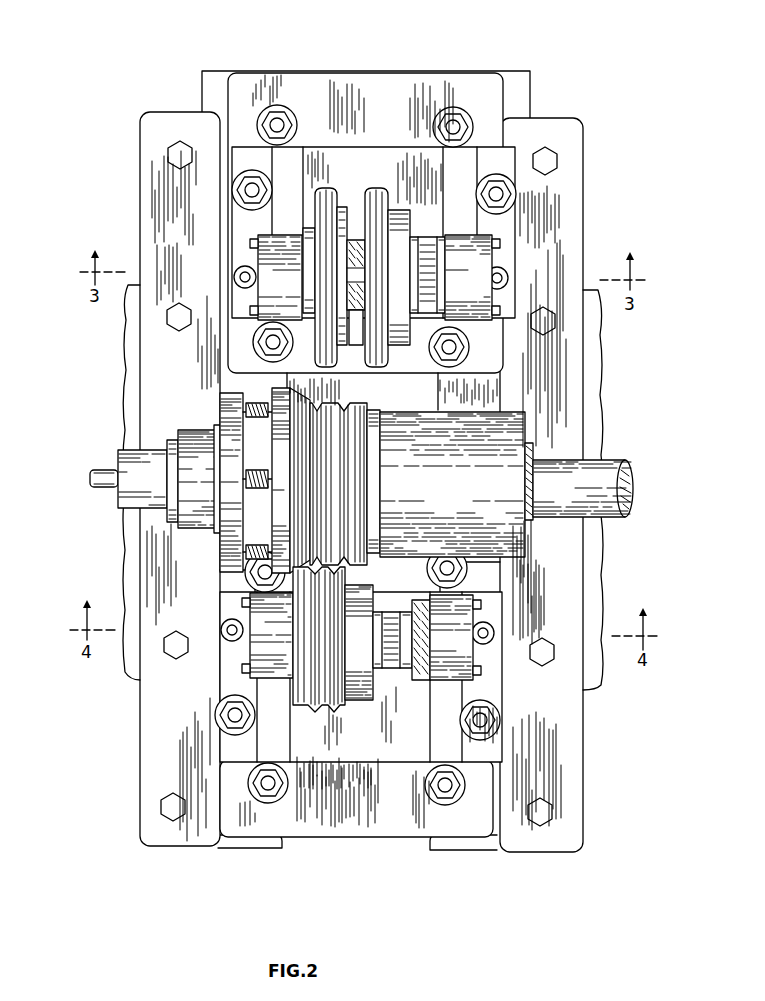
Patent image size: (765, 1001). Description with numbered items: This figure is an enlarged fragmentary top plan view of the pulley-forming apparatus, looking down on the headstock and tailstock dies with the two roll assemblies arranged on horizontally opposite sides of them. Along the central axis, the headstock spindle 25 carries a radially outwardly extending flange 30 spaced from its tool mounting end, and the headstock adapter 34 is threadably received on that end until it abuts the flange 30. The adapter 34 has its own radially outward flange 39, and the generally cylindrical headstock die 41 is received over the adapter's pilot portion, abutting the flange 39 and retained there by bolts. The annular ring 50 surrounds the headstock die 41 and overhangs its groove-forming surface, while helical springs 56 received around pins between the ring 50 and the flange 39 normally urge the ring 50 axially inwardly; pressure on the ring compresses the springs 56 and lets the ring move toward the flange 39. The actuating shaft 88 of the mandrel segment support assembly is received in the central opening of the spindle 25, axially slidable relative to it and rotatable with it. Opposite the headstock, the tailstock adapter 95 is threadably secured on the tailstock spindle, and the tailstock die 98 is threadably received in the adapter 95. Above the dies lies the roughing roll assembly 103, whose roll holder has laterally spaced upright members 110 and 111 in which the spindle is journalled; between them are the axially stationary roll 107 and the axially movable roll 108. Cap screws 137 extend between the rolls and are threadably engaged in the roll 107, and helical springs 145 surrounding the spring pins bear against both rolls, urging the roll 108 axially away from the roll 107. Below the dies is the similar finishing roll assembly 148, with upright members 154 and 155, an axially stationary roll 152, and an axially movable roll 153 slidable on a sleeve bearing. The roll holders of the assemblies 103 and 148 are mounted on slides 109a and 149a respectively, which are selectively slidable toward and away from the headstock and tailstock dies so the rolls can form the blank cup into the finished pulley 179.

The slide 109a is at (302, 87).
The roughing roll assembly 103 is at (386, 190).
The axially stationary roll 107 is at (322, 192).
The axially movable roll 108 is at (372, 188).
The helical springs 145 is at (338, 218).
The upright member 110 is at (282, 221).
The upright member 111 is at (465, 230).
The cap screws 137 is at (357, 337).
The tailstock die 98 is at (371, 407).
The adapter 95 is at (487, 462).
The finished pulley 179 is at (338, 486).
The headstock die 41 is at (227, 417).
The flange 39 is at (204, 430).
The headstock adapter 34 is at (178, 430).
The actuating shaft 88 is at (95, 470).
The headstock spindle 25 is at (131, 496).
The flange 30 is at (171, 514).
The helical springs 56 is at (258, 470).
The annular ring 50 is at (282, 524).
The upright member 154 is at (272, 672).
The upright member 155 is at (456, 682).
The axially stationary roll 152 is at (308, 706).
The axially movable roll 153 is at (362, 702).
The finishing roll assembly 148 is at (353, 707).
The slide 149a is at (328, 812).